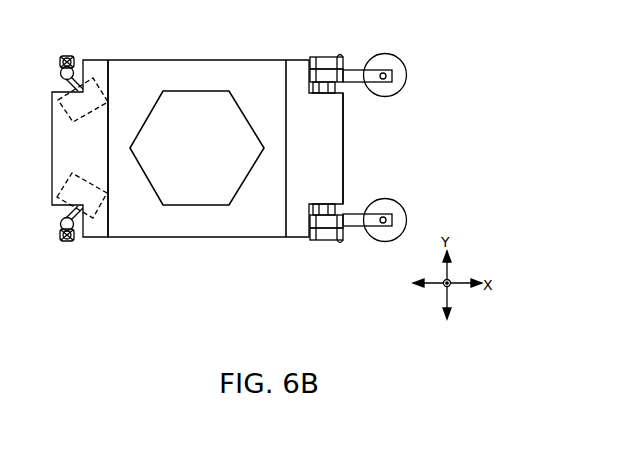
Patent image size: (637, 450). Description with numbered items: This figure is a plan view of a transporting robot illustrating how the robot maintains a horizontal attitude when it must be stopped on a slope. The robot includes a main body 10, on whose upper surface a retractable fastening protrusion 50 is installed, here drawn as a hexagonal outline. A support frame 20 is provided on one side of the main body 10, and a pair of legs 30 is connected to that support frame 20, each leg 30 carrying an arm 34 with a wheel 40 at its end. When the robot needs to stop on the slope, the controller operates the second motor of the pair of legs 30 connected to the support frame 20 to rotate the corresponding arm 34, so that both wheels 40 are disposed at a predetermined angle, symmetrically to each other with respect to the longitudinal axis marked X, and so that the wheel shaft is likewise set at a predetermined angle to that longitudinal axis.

The main body 10 is at (254, 77).
The support frame 20 is at (296, 230).
The leg 30 is at (358, 276).
The arm 34 is at (357, 227).
The wheel 40 is at (381, 58).
The fastening protrusion 50 is at (182, 108).